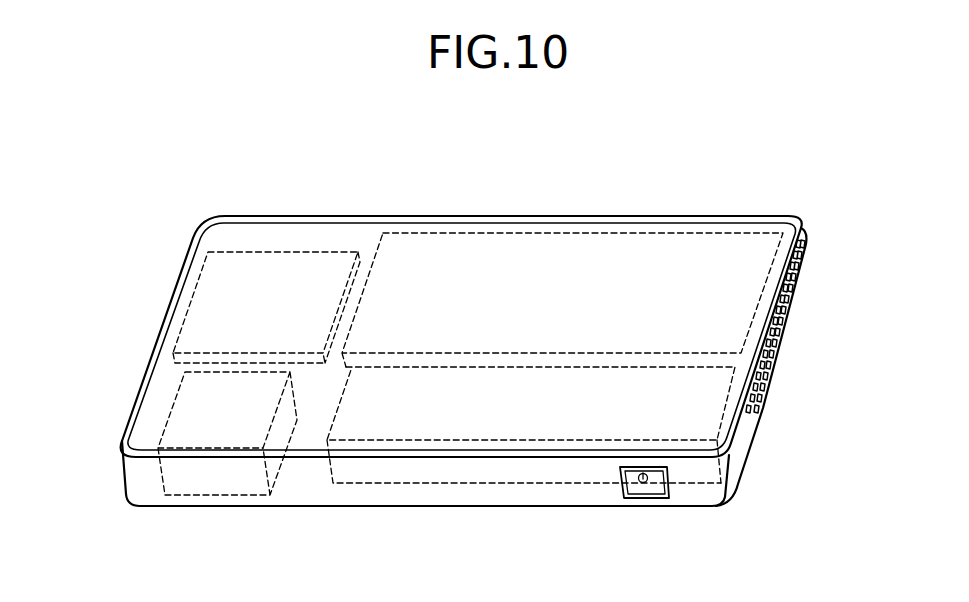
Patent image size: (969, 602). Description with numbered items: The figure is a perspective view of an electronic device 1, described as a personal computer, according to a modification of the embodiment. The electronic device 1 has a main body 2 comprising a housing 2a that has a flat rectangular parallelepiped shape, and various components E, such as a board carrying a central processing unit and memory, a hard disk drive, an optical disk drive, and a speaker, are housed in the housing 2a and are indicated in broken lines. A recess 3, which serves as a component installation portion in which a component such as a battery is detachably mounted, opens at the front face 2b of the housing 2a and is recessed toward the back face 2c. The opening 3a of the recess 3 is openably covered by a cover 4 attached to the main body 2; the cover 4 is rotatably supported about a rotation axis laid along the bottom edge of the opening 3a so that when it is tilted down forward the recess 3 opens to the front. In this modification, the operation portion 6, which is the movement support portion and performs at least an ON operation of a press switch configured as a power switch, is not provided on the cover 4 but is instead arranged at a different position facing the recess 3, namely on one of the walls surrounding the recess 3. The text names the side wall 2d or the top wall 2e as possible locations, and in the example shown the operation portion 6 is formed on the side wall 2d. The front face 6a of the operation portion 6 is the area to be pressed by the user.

The electronic device 1 is at (637, 185).
The main body 2 is at (466, 363).
The housing 2a is at (720, 218).
The front face 2b is at (785, 330).
The back face 2c is at (158, 405).
The side wall 2d is at (316, 493).
The top wall 2e is at (290, 235).
The recess 3 is at (527, 485).
The opening 3a is at (718, 506).
The cover 4 is at (750, 419).
The operation portion 6 is at (638, 496).
The front face of operation portion 6a is at (655, 492).
The components E is at (475, 233).